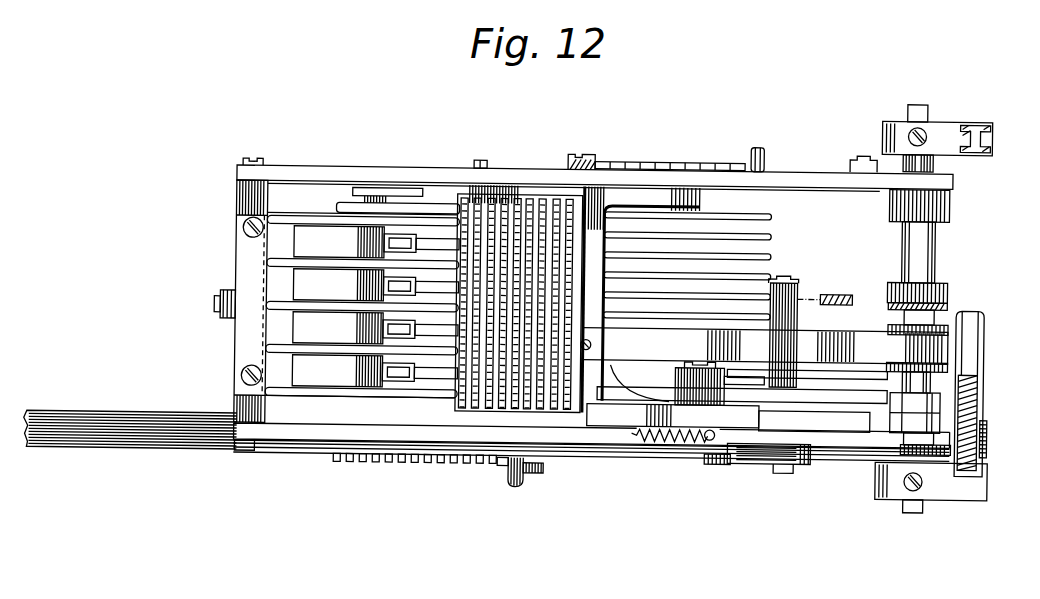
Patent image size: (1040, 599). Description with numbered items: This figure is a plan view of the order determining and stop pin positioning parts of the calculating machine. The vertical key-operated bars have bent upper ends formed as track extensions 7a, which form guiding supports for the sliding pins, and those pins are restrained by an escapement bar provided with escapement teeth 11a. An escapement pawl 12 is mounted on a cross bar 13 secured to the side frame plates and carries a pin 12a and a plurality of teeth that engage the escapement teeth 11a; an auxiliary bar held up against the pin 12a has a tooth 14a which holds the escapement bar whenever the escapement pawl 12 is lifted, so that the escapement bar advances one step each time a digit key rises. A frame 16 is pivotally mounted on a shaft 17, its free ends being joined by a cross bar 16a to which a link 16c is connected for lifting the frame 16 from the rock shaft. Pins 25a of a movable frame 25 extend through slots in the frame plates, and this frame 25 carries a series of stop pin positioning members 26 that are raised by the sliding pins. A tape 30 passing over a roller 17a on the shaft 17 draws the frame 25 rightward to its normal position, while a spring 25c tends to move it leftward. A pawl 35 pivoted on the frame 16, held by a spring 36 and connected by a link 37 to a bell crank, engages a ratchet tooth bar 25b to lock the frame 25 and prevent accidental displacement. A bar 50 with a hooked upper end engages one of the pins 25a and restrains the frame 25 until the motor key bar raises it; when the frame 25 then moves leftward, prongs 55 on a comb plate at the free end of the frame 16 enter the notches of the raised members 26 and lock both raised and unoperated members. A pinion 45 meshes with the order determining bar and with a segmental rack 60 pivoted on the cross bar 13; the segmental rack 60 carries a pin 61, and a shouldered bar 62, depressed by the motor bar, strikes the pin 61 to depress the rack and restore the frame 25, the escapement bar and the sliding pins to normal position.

The track extensions 7a is at (779, 234).
The escapement teeth 11a is at (374, 478).
The escapement pawl 12 is at (585, 452).
The pin 12a is at (524, 474).
The cross bar 13 is at (188, 441).
The tooth 14a is at (500, 462).
The frame 16 is at (397, 165).
The cross bar 16a is at (246, 201).
The link 16c is at (233, 314).
The shaft 17 is at (927, 115).
The roller 17a is at (944, 318).
The frame 25 is at (737, 410).
The pins 25a is at (486, 160).
The ratchet tooth bar 25b is at (697, 148).
The spring 25c is at (641, 425).
The stop pin positioning members 26 is at (560, 368).
The tape 30 is at (766, 306).
The pawl 35 is at (803, 165).
The spring 36 is at (768, 151).
The link 37 is at (594, 157).
The pinion 45 is at (720, 395).
The bar 50 is at (771, 452).
The prongs 55 is at (343, 268).
The segmental rack 60 is at (833, 381).
The pin 61 is at (799, 314).
The bar 62 is at (841, 278).